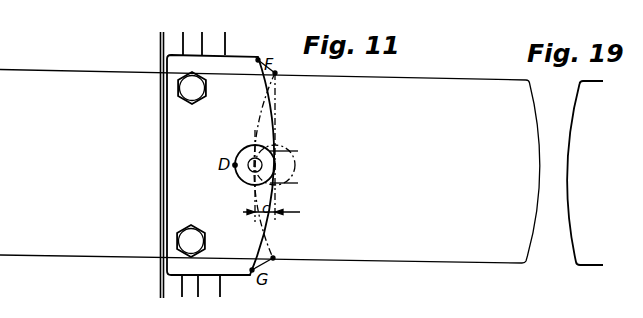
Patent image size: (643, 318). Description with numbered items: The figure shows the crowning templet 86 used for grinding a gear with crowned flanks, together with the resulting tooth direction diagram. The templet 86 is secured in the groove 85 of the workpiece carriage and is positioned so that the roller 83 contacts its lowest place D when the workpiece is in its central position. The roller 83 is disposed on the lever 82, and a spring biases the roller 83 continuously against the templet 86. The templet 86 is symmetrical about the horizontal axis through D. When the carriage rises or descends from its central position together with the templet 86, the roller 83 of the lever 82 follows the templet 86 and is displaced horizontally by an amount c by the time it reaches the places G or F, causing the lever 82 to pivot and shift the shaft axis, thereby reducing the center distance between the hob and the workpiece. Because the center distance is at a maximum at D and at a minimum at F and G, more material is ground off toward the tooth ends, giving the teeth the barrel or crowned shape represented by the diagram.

The lever 82 is at (295, 152).
The roller 83 is at (257, 148).
The groove 85 is at (193, 293).
The crowning templet 86 is at (245, 103).